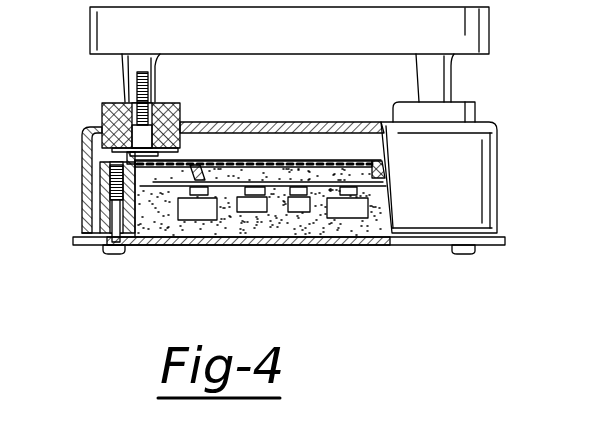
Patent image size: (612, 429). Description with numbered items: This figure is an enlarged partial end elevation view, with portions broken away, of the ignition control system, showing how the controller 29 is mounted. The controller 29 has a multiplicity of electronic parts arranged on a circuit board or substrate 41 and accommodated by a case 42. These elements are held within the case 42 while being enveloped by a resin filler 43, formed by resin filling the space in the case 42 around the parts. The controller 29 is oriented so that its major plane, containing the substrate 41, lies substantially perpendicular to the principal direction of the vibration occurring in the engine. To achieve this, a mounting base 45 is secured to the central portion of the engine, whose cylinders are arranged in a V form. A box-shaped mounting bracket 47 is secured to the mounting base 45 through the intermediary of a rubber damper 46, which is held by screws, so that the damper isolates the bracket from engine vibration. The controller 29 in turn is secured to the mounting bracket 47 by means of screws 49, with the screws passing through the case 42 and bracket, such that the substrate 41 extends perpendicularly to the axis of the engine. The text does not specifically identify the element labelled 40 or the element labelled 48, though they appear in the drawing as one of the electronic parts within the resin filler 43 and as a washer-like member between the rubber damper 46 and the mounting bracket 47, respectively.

The controller 29 is at (414, 256).
The electronic component 40 is at (343, 207).
The substrate 41 is at (280, 222).
The case 42 is at (100, 205).
The resin filler 43 is at (233, 222).
The mounting base 45 is at (97, 35).
The rubber damper 46 is at (103, 107).
The mounting bracket 47 is at (82, 145).
The washer plate 48 is at (112, 152).
The screws 49 is at (124, 250).